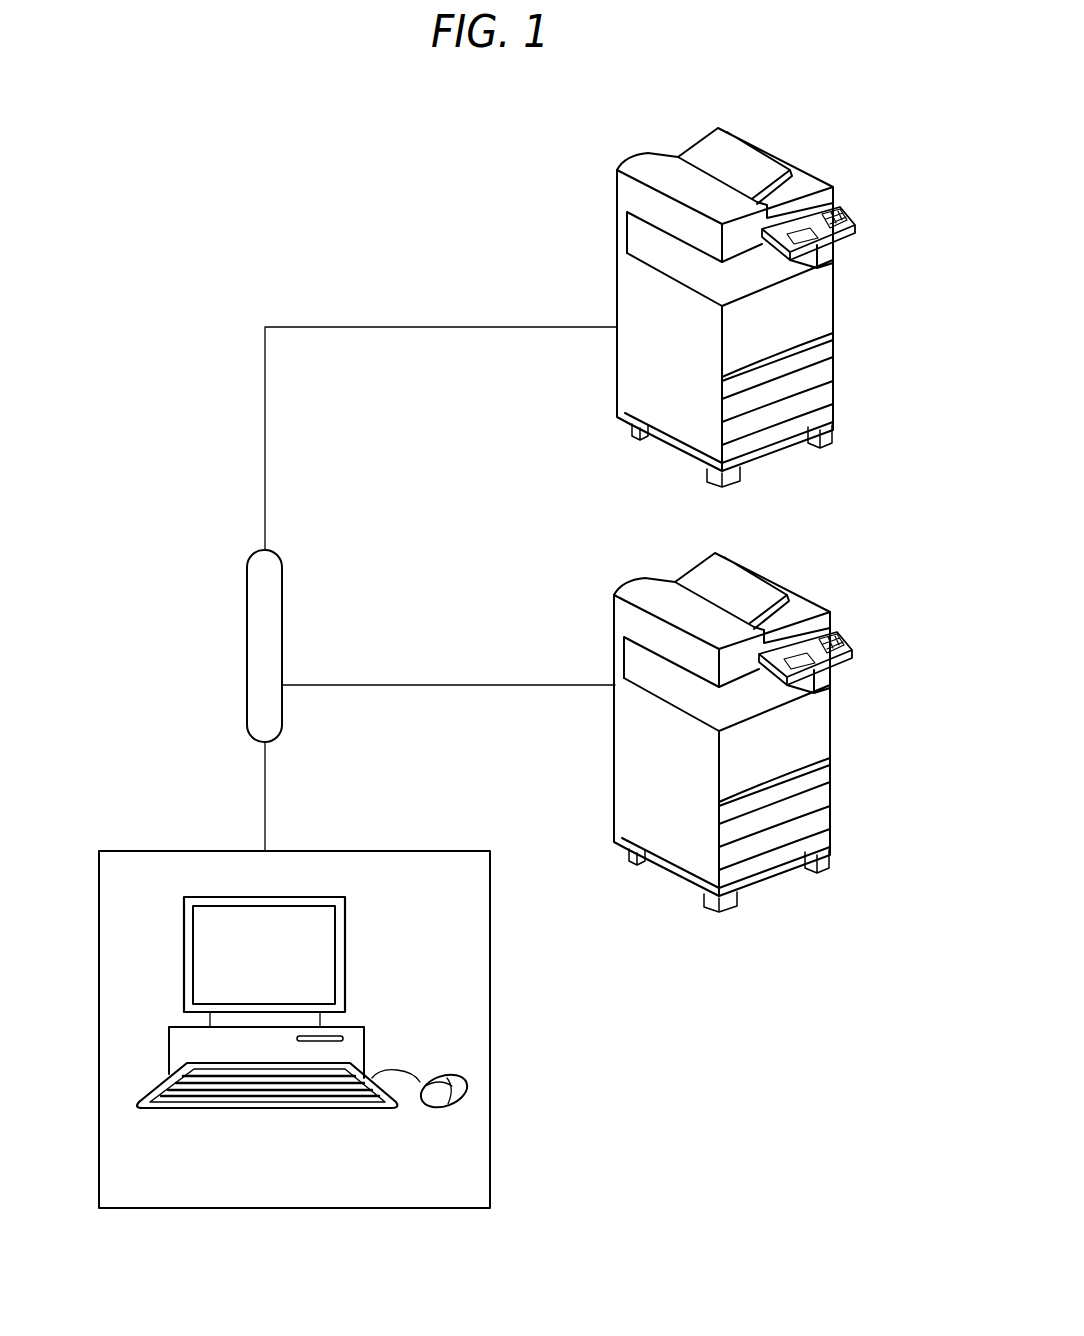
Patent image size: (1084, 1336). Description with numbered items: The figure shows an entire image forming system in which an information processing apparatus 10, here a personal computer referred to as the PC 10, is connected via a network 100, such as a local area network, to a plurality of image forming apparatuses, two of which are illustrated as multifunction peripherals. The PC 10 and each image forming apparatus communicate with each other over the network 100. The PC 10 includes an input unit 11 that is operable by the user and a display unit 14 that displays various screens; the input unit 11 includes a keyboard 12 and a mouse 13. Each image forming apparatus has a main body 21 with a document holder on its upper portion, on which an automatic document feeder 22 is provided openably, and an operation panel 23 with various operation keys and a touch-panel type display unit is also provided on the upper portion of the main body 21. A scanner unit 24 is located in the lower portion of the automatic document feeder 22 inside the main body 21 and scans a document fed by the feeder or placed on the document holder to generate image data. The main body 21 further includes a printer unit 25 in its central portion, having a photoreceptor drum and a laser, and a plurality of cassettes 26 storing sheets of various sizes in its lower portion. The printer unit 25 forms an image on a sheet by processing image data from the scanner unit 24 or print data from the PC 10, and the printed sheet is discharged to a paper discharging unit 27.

The information processing apparatus 10 is at (346, 850).
The input unit 11 is at (348, 1113).
The keyboard 12 is at (257, 1098).
The mouse 13 is at (449, 1078).
The display unit 14 is at (320, 963).
The main body 21 is at (618, 365).
The automatic document feeder 22 is at (652, 167).
The operation panel 23 is at (847, 210).
The scanner unit 24 is at (697, 220).
The printer unit 25 is at (800, 303).
The cassettes 26 is at (807, 360).
The paper discharging unit 27 is at (687, 260).
The network 100 is at (283, 598).